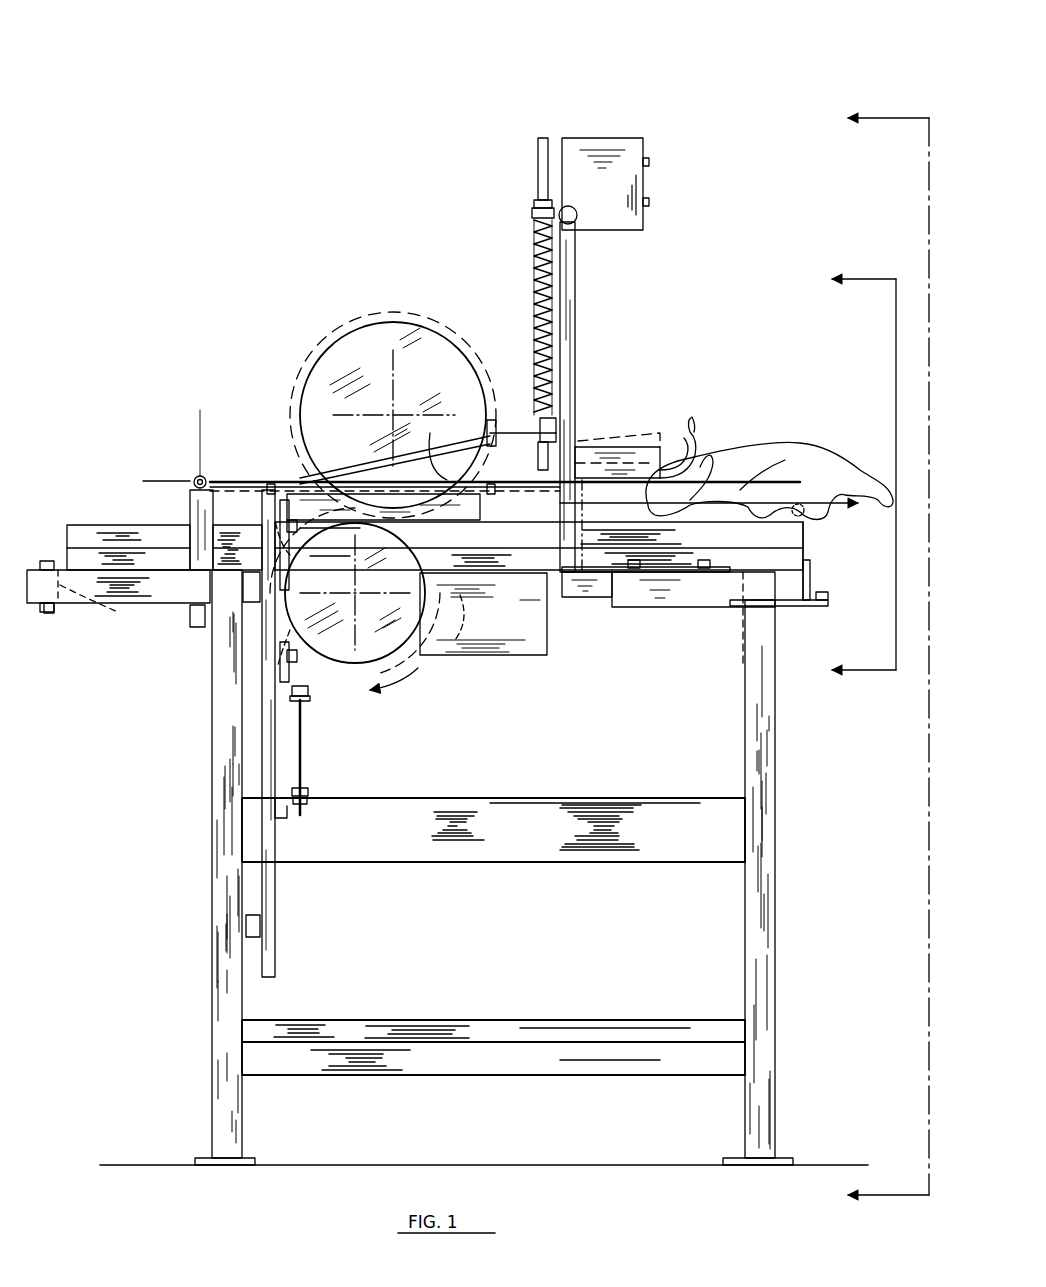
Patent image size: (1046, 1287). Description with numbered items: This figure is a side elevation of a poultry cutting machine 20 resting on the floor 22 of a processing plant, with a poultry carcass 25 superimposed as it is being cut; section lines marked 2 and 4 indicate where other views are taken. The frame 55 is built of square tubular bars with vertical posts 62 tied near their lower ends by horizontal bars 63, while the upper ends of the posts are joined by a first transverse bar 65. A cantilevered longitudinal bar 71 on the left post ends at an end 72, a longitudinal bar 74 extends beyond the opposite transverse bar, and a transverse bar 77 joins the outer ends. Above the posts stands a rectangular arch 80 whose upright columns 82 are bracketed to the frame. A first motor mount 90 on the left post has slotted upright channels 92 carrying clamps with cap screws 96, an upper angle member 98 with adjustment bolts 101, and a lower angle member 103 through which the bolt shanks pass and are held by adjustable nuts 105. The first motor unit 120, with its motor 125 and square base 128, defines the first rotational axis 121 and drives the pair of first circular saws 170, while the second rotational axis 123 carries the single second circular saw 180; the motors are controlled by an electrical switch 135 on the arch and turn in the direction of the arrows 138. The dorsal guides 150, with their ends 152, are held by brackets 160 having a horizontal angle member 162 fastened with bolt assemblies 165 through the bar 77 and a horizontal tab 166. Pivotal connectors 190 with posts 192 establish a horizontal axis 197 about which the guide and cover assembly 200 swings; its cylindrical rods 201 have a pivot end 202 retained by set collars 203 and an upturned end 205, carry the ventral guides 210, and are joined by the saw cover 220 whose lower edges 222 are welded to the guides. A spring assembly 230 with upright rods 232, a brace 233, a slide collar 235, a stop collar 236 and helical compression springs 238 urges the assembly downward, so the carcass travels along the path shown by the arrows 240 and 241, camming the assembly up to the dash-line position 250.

The poultry cutting machine 20 is at (178, 337).
The floor 22 is at (162, 1163).
The poultry carcass 25 is at (780, 447).
The frame 55 is at (519, 867).
The vertical posts 62 is at (225, 945).
The horizontal bars 63 is at (440, 1065).
The first transverse horizontal bar 65 is at (742, 650).
The horizontal longitudinal bar 71 is at (648, 590).
The end of longitudinal bar 72 is at (612, 590).
The longitudinal bar 74 is at (118, 607).
The horizontal transverse bar 77 is at (165, 595).
The rectangular arch 80 is at (612, 389).
The upright columns 82 is at (578, 328).
The first motor mount 90 is at (328, 768).
The upright channels 92 is at (265, 663).
The cap screw 96 is at (297, 526).
The upper angle member 98 is at (302, 698).
The adjustment bolts 101 is at (304, 745).
The lower angle member 103 is at (286, 808).
The adjustable nuts 105 is at (306, 801).
The first motor unit 120 is at (408, 611).
The first rotational axis 121 is at (355, 593).
The second rotational axis 123 is at (395, 385).
The motor 125 is at (398, 641).
The base 128 is at (288, 582).
The electrical switch 135 is at (605, 150).
The arrows 138 is at (438, 520).
The dorsal guides 150 is at (411, 548).
The ends of dorsal guides 152 is at (82, 530).
The brackets 160 is at (60, 545).
The horizontal angle member 162 is at (812, 582).
The bolt assemblies 165 is at (48, 610).
The horizontal tab 166 is at (825, 608).
The first circular saws 170 is at (350, 670).
The second circular saw 180 is at (392, 515).
The pivotal connectors 190 is at (205, 452).
The posts 192 is at (190, 510).
The horizontal axis 197 is at (175, 480).
The guide and cover assembly 200 is at (665, 419).
The cylindrical rods 201 is at (262, 488).
The pivot end 202 is at (207, 476).
The set collars 203 is at (207, 485).
The upturned end 205 is at (693, 445).
The ventral guides 210 is at (592, 447).
The saw cover 220 is at (404, 405).
The lower edges 222 is at (432, 428).
The spring assembly 230 is at (477, 291).
The upright rods 232 is at (540, 140).
The brace 233 is at (578, 412).
The slide collar 235 is at (533, 213).
The stop collar 236 is at (536, 204).
The helical compression springs 238 is at (530, 282).
The arrow 240 is at (526, 502).
The arrow 241 is at (835, 512).
The raised position 250 is at (355, 300).
The section line 2 is at (873, 658).
The section line 4 is at (851, 476).